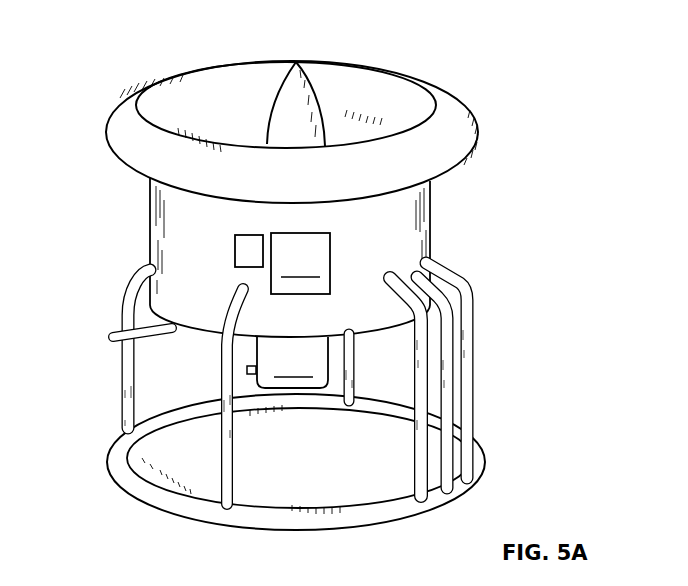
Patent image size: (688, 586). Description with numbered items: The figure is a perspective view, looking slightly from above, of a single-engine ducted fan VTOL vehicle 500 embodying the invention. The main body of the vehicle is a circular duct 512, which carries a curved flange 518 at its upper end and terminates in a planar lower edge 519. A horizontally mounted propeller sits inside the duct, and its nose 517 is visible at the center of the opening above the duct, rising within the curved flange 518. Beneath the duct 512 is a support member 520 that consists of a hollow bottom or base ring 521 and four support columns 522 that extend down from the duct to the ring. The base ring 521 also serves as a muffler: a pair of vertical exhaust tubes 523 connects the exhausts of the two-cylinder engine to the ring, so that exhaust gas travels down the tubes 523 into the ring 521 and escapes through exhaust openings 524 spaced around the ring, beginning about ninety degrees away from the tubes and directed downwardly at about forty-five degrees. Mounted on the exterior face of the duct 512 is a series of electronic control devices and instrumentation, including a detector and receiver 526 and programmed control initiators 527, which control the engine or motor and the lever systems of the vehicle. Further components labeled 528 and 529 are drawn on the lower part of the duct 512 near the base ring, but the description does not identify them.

The single-engine ducted fan VTOL vehicle 500 is at (481, 59).
The duct 512 is at (444, 230).
The nose 517 is at (297, 62).
The curved flange 518 is at (450, 101).
The planar lower edge 519 is at (464, 172).
The support member 520 is at (112, 334).
The base ring 521 is at (300, 530).
The support columns 522 is at (127, 380).
The vertical exhaust tubes 523 is at (463, 287).
The exhaust openings 524 is at (186, 500).
The detector and receiver 526 is at (300, 263).
The programmed control initiators 527 is at (247, 248).
The lower module 528 is at (292, 362).
The connector 529 is at (248, 368).